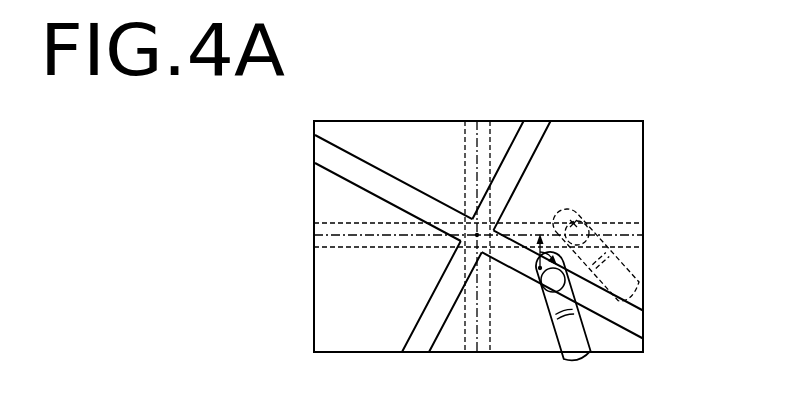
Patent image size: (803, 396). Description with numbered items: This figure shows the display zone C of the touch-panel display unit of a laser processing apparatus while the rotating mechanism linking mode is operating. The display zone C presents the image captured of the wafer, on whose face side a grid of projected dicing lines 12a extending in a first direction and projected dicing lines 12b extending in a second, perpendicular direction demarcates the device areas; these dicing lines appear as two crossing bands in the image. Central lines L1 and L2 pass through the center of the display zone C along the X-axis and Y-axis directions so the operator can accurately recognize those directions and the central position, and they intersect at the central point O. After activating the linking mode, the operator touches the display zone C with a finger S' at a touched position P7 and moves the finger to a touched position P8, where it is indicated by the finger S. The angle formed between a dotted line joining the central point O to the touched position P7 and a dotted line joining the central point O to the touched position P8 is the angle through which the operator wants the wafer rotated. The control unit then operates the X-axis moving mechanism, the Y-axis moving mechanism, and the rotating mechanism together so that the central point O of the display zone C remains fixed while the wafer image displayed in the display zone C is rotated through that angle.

The display zone C is at (325, 177).
The projected dicing lines 12a is at (403, 198).
The projected dicing lines 12b is at (468, 158).
The central line L1 is at (342, 237).
The central line L2 is at (478, 138).
The central point O is at (478, 233).
The finger S is at (590, 320).
The finger S' is at (623, 255).
The touched position P7 is at (578, 226).
The touched position P8 is at (539, 290).